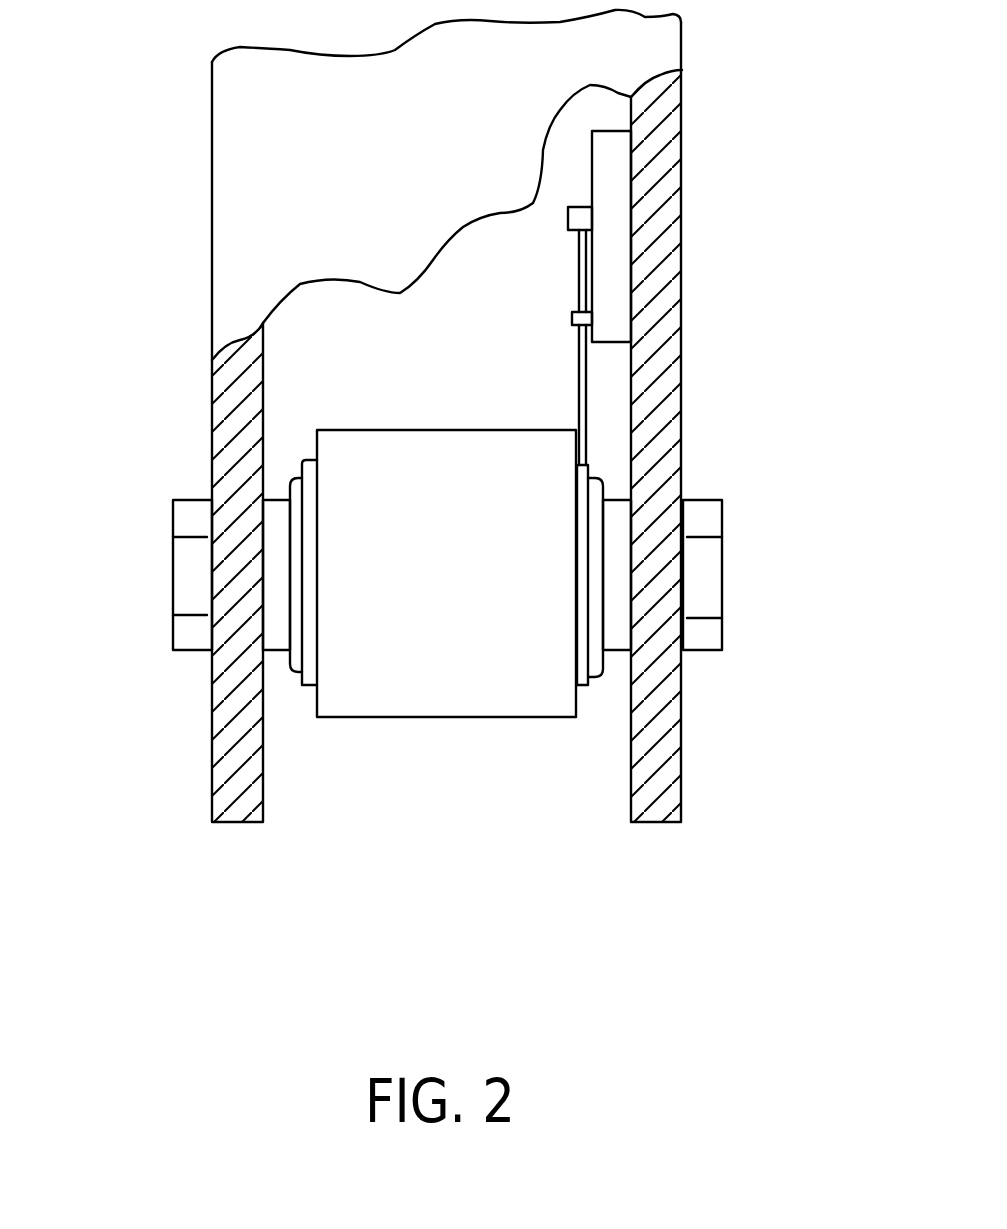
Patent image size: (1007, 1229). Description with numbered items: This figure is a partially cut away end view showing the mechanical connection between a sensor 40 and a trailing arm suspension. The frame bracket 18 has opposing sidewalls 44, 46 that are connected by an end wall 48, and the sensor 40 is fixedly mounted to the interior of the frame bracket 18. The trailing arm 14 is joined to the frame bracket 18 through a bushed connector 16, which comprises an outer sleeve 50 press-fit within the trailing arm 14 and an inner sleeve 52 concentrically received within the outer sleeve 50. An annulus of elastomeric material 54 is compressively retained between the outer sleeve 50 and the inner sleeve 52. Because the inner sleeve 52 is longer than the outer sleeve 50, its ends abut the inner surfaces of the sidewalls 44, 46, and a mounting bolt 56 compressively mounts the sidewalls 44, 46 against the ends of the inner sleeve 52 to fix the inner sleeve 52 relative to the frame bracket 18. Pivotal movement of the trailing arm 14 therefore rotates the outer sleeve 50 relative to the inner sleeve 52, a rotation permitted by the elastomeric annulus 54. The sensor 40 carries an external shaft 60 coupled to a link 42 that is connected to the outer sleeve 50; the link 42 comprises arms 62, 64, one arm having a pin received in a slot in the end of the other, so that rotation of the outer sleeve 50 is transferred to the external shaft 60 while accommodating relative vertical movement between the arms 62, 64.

The trailing arm 14 is at (420, 719).
The bushed connector 16 is at (297, 690).
The frame bracket 18 is at (441, 416).
The sensor 40 is at (613, 222).
The link 42 is at (570, 317).
The sidewall 44 is at (680, 720).
The sidewall 46 is at (210, 457).
The end wall 48 is at (275, 262).
The outer sleeve 50 is at (582, 688).
The inner sleeve 52 is at (610, 651).
The annulus of elastomeric material 54 is at (595, 678).
The mounting bolt 56 is at (722, 585).
The external shaft 60 is at (577, 212).
The arm 62 is at (575, 245).
The arm 64 is at (575, 397).